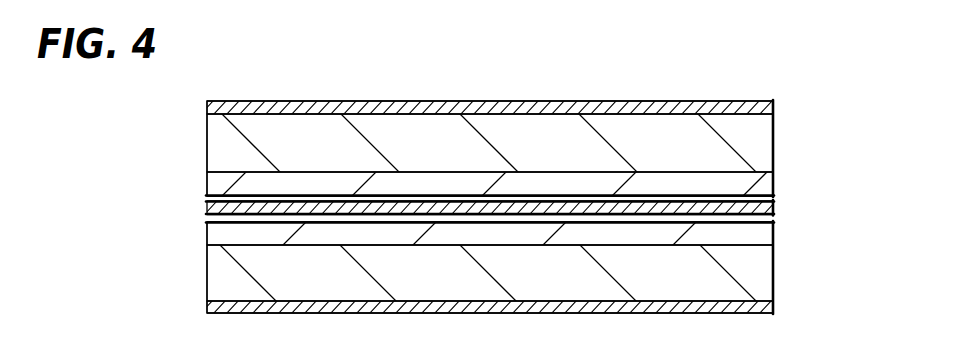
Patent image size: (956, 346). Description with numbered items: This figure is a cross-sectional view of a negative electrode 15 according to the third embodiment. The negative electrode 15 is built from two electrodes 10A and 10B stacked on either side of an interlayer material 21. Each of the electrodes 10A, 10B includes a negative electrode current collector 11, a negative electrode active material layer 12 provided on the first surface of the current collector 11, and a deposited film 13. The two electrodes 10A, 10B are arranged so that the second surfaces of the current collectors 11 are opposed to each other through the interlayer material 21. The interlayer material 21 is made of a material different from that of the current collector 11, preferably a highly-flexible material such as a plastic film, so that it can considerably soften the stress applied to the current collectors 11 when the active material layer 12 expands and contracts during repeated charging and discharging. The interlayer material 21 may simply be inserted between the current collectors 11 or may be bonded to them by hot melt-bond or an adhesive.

The electrode 10A is at (778, 100).
The electrode 10B is at (778, 222).
The negative electrode current collector 11 is at (222, 235).
The negative electrode active material layer 12 is at (217, 130).
The deposited film 13 is at (209, 105).
The negative electrode 15 is at (877, 190).
The interlayer material 21 is at (776, 211).